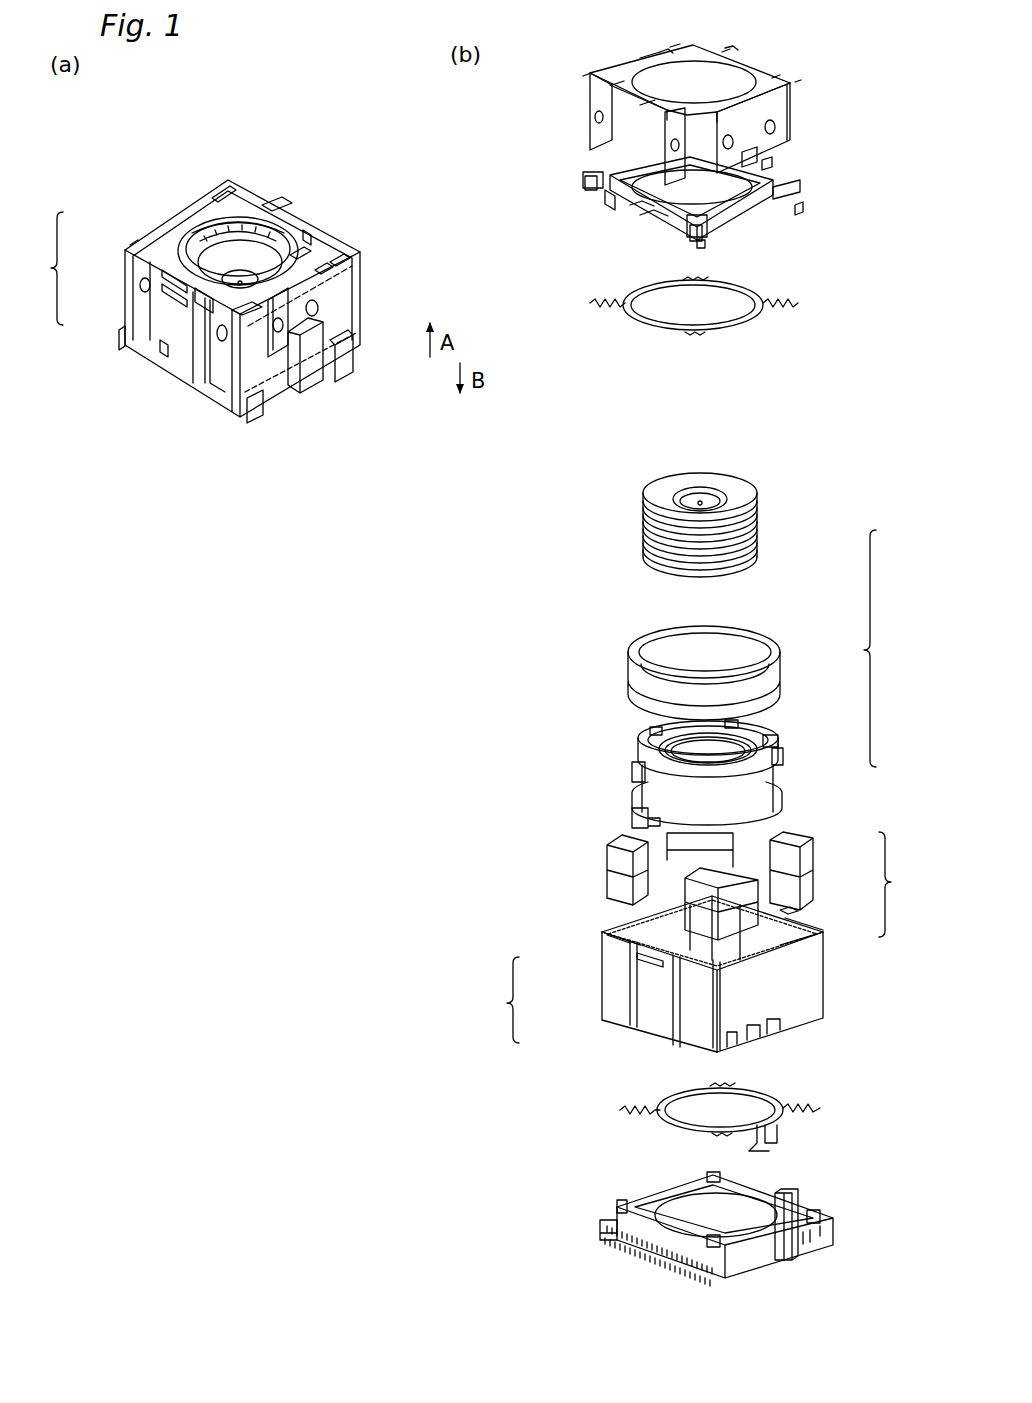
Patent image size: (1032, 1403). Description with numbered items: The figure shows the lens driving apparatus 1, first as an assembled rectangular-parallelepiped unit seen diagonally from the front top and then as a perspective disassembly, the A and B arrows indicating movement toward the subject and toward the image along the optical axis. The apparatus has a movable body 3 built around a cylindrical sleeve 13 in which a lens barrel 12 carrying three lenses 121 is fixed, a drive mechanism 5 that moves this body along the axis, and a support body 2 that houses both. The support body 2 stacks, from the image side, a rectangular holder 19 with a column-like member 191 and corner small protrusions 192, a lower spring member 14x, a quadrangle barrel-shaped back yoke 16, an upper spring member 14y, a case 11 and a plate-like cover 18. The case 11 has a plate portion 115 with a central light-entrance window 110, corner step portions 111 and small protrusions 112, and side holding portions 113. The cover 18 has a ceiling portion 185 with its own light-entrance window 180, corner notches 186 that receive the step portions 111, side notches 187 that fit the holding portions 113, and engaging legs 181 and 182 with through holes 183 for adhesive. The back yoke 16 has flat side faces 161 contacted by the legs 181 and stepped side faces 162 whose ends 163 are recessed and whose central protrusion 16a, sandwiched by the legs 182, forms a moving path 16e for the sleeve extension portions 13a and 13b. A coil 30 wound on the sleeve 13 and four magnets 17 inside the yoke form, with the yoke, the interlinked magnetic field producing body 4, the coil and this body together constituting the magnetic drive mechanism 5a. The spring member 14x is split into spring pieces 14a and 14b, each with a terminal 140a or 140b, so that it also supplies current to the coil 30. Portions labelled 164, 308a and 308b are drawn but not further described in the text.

The lens driving apparatus 1 is at (325, 150).
The support body 2 is at (51, 268).
The movable body 3 is at (274, 253).
The interlinked magnetic field producing body 4 is at (890, 884).
The drive mechanism 5 is at (633, 741).
The magnetic drive mechanism 5a is at (708, 749).
The case 11 is at (130, 245).
The lens barrel 12 is at (459, 362).
The lens 121 is at (728, 493).
The sleeve 13 is at (683, 765).
The extension portion 13a is at (775, 735).
The extension portion 13b is at (660, 827).
The spring piece 14a is at (757, 1092).
The spring piece 14b is at (657, 1118).
The spring member 14x is at (745, 1110).
The spring member 14y is at (782, 295).
The terminal 140a is at (763, 1147).
The terminal 140b is at (777, 1130).
The back yoke 16 is at (137, 318).
The protrusion 16a is at (775, 892).
The moving path 16e is at (790, 920).
The side face 161 is at (350, 311).
The side face 162 is at (225, 375).
The end 163 is at (145, 327).
The yoke side plate 164 is at (166, 347).
The magnet 17 is at (743, 822).
The plate-like cover 18 is at (148, 239).
The light-entrance window 180 is at (241, 218).
The engaging leg 181 is at (281, 343).
The engaging leg 182 is at (143, 311).
The through hole 183 is at (280, 357).
The ceiling portion 185 is at (623, 70).
The notch 186 is at (585, 75).
The notch 187 is at (727, 53).
The holder 19 is at (132, 322).
The column-like member 191 is at (315, 384).
The small protrusion 192 is at (713, 1175).
The coil 30 is at (777, 640).
The light-entrance window 110 is at (768, 205).
The step portion 111 is at (227, 187).
The small protrusion 112 is at (698, 245).
The holding portion 113 is at (311, 232).
The plate portion 115 is at (680, 223).
The engaging portion 308a is at (352, 379).
The engaging portion 308b is at (256, 427).